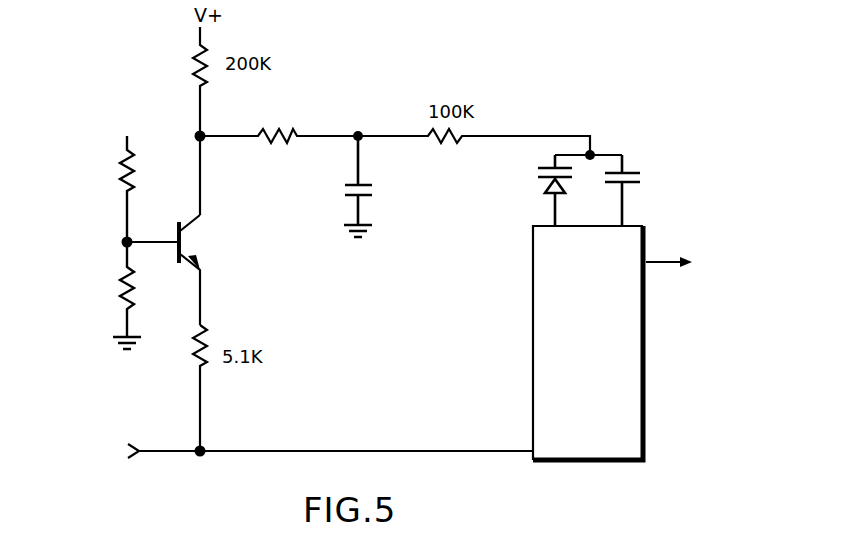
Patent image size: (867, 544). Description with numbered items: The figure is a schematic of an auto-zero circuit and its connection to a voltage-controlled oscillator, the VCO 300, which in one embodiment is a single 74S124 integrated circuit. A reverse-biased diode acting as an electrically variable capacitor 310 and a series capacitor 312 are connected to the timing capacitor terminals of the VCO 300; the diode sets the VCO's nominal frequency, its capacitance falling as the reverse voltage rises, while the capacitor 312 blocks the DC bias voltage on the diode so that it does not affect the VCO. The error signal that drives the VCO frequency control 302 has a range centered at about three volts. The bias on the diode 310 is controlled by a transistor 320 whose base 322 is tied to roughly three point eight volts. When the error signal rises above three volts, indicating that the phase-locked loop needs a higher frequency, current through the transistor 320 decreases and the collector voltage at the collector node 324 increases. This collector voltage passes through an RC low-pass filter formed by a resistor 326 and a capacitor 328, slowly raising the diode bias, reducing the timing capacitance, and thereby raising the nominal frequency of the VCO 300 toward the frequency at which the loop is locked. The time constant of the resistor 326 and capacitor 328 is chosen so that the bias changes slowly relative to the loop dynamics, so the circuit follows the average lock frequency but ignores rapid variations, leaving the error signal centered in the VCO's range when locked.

The VCO 300 is at (627, 357).
The VCO frequency control 302 is at (456, 422).
The electrically variable capacitor 310 is at (538, 192).
The capacitor 312 is at (636, 168).
The transistor 320 is at (190, 240).
The base 322 is at (120, 240).
The collector node 324 is at (192, 133).
The resistor 326 is at (300, 133).
The capacitor 328 is at (345, 185).